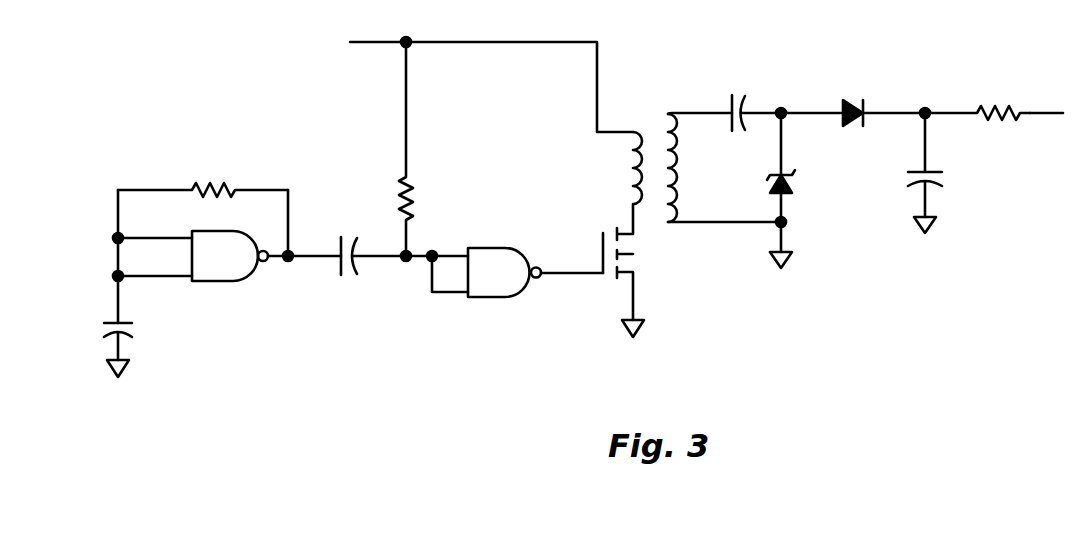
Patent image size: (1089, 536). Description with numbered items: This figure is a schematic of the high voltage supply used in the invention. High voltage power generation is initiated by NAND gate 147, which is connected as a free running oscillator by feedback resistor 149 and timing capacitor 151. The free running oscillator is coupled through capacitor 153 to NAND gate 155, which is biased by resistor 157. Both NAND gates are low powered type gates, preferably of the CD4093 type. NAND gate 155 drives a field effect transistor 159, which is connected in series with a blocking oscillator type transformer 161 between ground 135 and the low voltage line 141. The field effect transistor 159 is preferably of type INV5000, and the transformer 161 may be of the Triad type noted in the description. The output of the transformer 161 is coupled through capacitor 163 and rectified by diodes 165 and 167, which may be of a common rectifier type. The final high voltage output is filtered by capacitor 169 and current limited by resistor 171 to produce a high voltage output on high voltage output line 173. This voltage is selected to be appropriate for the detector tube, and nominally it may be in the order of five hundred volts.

The low voltage line 141 is at (393, 42).
The NAND gate 147 is at (222, 281).
The feedback resistor 149 is at (238, 187).
The timing capacitor 151 is at (124, 322).
The capacitor 153 is at (341, 278).
The NAND gate 155 is at (478, 297).
The resistor 157 is at (406, 177).
The field effect transistor 159 is at (601, 236).
The blocking oscillator type transformer 161 is at (644, 196).
The capacitor 163 is at (823, 75).
The diode 165 is at (788, 176).
The diode 167 is at (862, 112).
The capacitor 169 is at (930, 172).
The resistor 171 is at (1010, 110).
The high voltage output line 173 is at (1030, 114).
The ground 135 is at (122, 376).